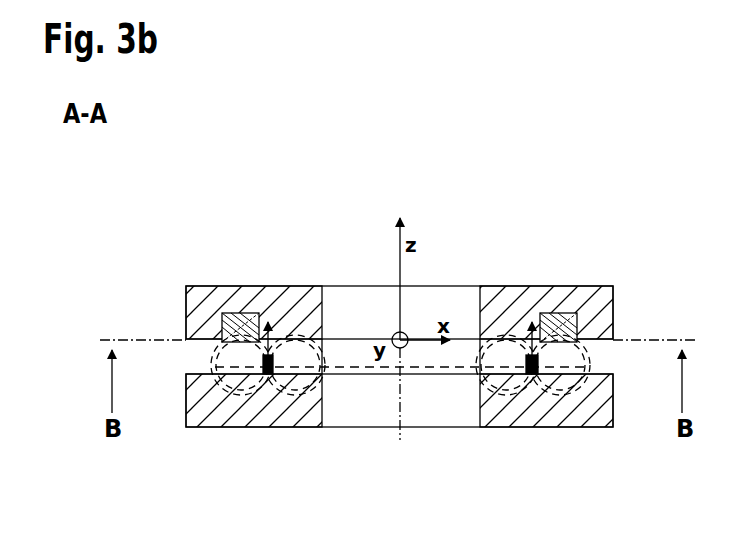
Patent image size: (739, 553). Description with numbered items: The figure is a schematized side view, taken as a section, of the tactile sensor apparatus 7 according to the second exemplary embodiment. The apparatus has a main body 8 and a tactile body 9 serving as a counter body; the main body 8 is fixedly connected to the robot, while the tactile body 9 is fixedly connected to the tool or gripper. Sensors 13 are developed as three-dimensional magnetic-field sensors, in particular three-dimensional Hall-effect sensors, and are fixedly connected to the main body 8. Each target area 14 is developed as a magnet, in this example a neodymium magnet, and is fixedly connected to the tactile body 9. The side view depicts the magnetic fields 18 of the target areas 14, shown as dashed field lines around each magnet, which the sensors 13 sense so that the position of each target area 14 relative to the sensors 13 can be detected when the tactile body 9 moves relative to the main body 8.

The tactile sensor apparatus 7 is at (491, 217).
The main body 8 is at (594, 286).
The tactile body 9 is at (597, 428).
The sensor 13 is at (243, 313).
The target area 14 is at (268, 376).
The magnetic field 18 is at (215, 362).